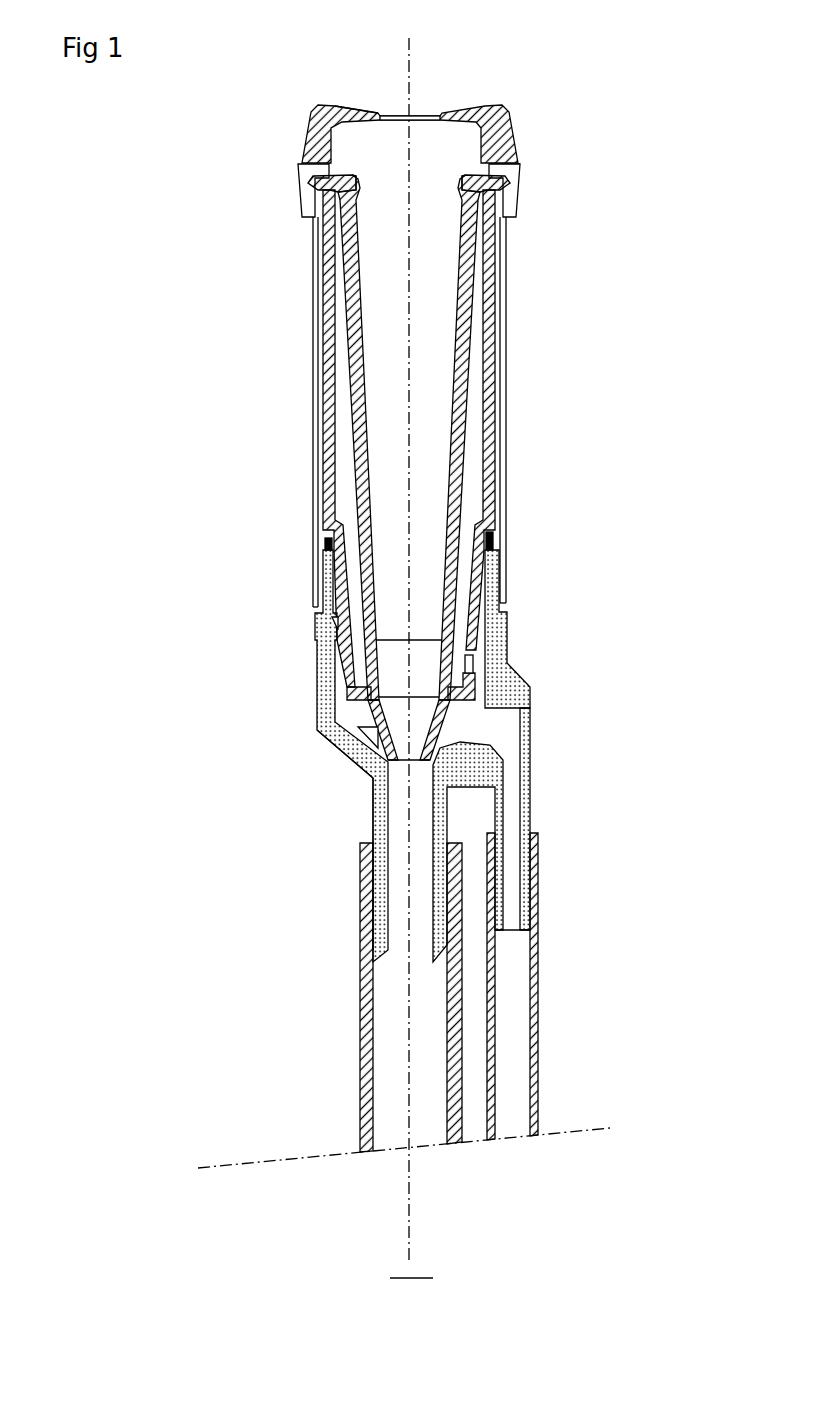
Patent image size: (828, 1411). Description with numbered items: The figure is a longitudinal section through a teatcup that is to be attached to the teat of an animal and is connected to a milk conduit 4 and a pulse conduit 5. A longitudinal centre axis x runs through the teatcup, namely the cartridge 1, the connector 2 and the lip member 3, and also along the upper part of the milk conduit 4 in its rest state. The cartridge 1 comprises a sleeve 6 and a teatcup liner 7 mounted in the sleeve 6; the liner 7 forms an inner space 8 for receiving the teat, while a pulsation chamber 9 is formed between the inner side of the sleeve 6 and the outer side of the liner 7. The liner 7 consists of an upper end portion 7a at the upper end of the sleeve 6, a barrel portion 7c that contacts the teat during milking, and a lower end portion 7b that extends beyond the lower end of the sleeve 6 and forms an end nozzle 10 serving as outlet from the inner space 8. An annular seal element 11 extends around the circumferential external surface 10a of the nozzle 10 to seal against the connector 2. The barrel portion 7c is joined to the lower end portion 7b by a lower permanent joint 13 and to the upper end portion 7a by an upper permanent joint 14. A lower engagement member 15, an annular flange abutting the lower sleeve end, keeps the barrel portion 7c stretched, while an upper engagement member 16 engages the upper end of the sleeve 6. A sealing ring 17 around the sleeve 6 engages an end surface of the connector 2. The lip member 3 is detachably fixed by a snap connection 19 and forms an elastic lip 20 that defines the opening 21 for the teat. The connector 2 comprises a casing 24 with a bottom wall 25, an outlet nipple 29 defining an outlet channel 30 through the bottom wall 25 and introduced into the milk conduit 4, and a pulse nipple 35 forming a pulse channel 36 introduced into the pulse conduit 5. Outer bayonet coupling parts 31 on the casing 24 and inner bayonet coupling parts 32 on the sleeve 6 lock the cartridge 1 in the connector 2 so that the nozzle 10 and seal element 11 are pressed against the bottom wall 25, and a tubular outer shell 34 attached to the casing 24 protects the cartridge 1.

The cartridge 1 is at (323, 322).
The connector 2 is at (510, 638).
The lip member 3 is at (308, 108).
The milk conduit 4 is at (358, 977).
The pulse conduit 5 is at (540, 986).
The sleeve 6 is at (493, 347).
The teatcup liner 7 is at (460, 322).
The upper end portion 7a is at (318, 184).
The lower end portion 7b is at (368, 706).
The barrel portion 7c is at (356, 402).
The inner space 8 is at (432, 311).
The pulsation chamber 9 is at (471, 496).
The end nozzle 10 is at (371, 716).
The circumferential external surface 10a is at (455, 720).
The annular seal element 11 is at (376, 763).
The lower permanent joint 13 is at (395, 637).
The upper permanent joint 14 is at (503, 182).
The lower engagement member 15 is at (366, 698).
The upper engagement member 16 is at (513, 170).
The sealing ring 17 is at (493, 543).
The snap connection 19 is at (520, 204).
The lip 20 is at (360, 108).
The opening 21 is at (425, 112).
The casing 24 is at (328, 678).
The bottom wall 25 is at (372, 731).
The outlet nipple 29 is at (376, 797).
The outlet channel 30 is at (393, 833).
The outer bayonet coupling parts 31 is at (337, 622).
The inner bayonet coupling parts 32 is at (335, 633).
The outer shell 34 is at (501, 423).
The pulse nipple 35 is at (529, 812).
The pulse channel 36 is at (509, 826).
The longitudinal centre axis x is at (412, 62).